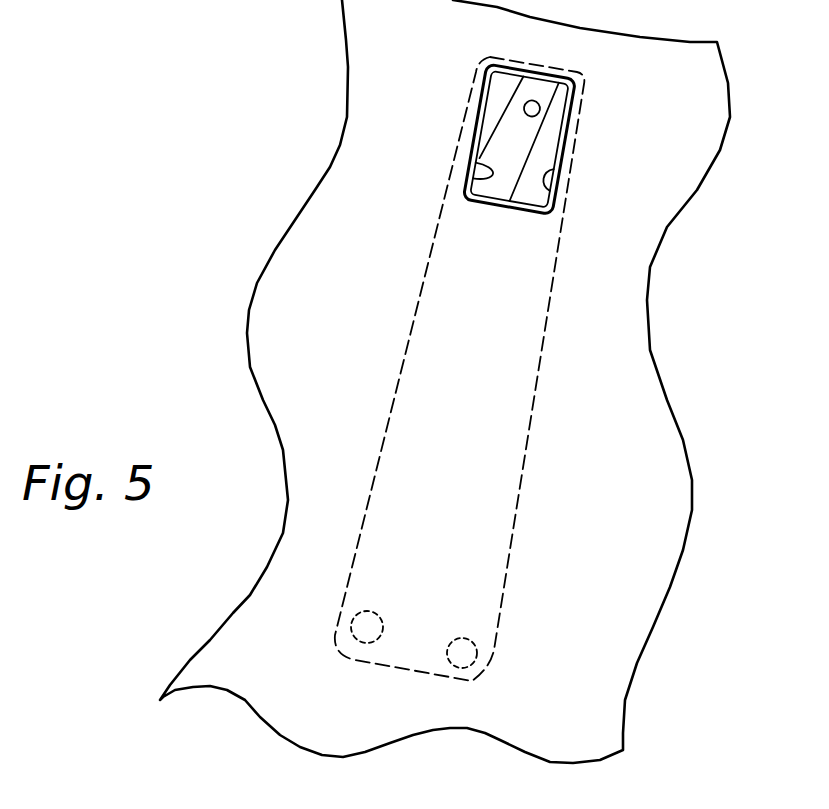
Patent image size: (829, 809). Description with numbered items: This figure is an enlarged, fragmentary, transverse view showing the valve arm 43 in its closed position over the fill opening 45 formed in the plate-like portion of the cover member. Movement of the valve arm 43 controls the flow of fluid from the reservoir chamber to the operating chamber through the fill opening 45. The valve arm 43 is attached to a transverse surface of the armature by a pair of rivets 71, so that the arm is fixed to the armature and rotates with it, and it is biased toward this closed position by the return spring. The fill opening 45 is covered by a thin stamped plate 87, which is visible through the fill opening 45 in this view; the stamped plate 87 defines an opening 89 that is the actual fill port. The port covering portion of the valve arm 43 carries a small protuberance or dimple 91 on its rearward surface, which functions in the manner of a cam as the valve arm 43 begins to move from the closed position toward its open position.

The valve arm 43 is at (395, 396).
The fill opening 45 is at (556, 187).
The rivets 71 is at (460, 660).
The stamped plate 87 is at (553, 128).
The opening 89 is at (484, 175).
The protuberance (dimple) 91 is at (523, 107).